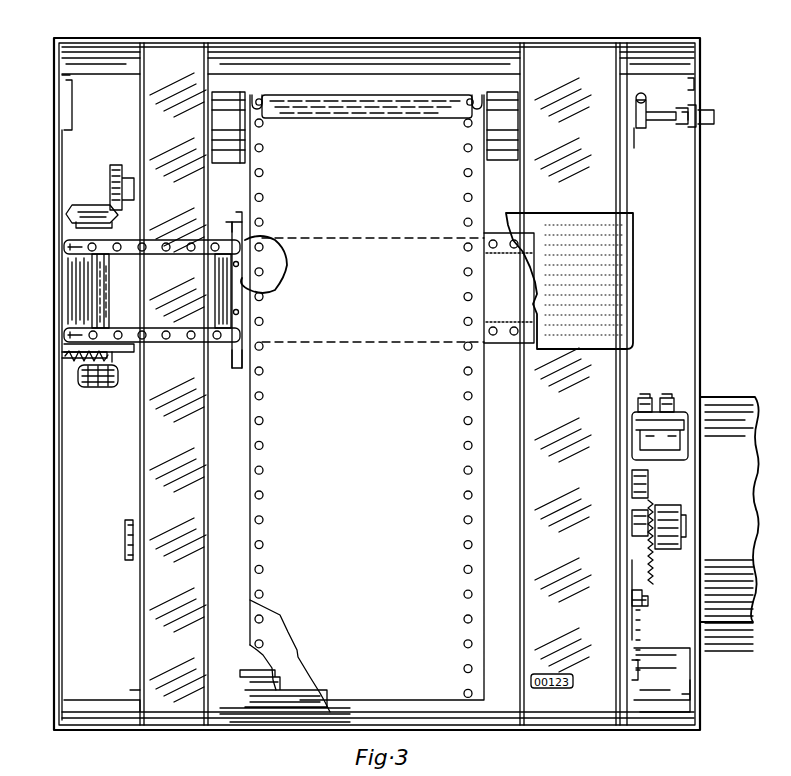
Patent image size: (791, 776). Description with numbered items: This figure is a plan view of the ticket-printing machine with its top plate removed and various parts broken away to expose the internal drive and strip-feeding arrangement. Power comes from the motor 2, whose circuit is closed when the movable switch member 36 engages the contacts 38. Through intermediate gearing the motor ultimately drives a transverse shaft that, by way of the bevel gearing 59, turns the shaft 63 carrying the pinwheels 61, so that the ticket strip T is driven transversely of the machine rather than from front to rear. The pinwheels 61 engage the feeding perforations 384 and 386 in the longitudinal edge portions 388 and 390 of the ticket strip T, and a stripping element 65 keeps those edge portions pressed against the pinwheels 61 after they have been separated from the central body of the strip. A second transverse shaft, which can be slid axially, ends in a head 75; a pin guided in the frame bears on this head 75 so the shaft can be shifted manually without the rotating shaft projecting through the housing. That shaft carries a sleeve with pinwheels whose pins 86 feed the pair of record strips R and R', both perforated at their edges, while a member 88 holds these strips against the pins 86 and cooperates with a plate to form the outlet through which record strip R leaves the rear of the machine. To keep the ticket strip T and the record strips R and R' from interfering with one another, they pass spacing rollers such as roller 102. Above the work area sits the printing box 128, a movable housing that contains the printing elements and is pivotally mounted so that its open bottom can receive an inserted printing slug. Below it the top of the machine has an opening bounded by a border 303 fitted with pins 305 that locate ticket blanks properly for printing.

The member 88 is at (372, 85).
The pins 86 is at (266, 103).
The head 75 is at (642, 116).
The bevel gearing 59 is at (100, 206).
The longitudinal edge portion 390 is at (228, 228).
The stripping element 65 is at (76, 279).
The pinwheels 61 is at (100, 255).
The feeding perforations 386 is at (148, 252).
The pins 305 is at (238, 264).
The border 303 is at (238, 290).
The shaft 63 is at (98, 300).
The feeding perforations 384 is at (145, 344).
The longitudinal edge portion 388 is at (224, 350).
The printing box 128 is at (634, 272).
The ticket strip T is at (500, 298).
The contacts 38 is at (668, 396).
The movable switch member 36 is at (676, 420).
The record strip R is at (367, 403).
The record strip R' is at (246, 622).
The spacing roller 102 is at (288, 720).
The motor 2 is at (658, 652).